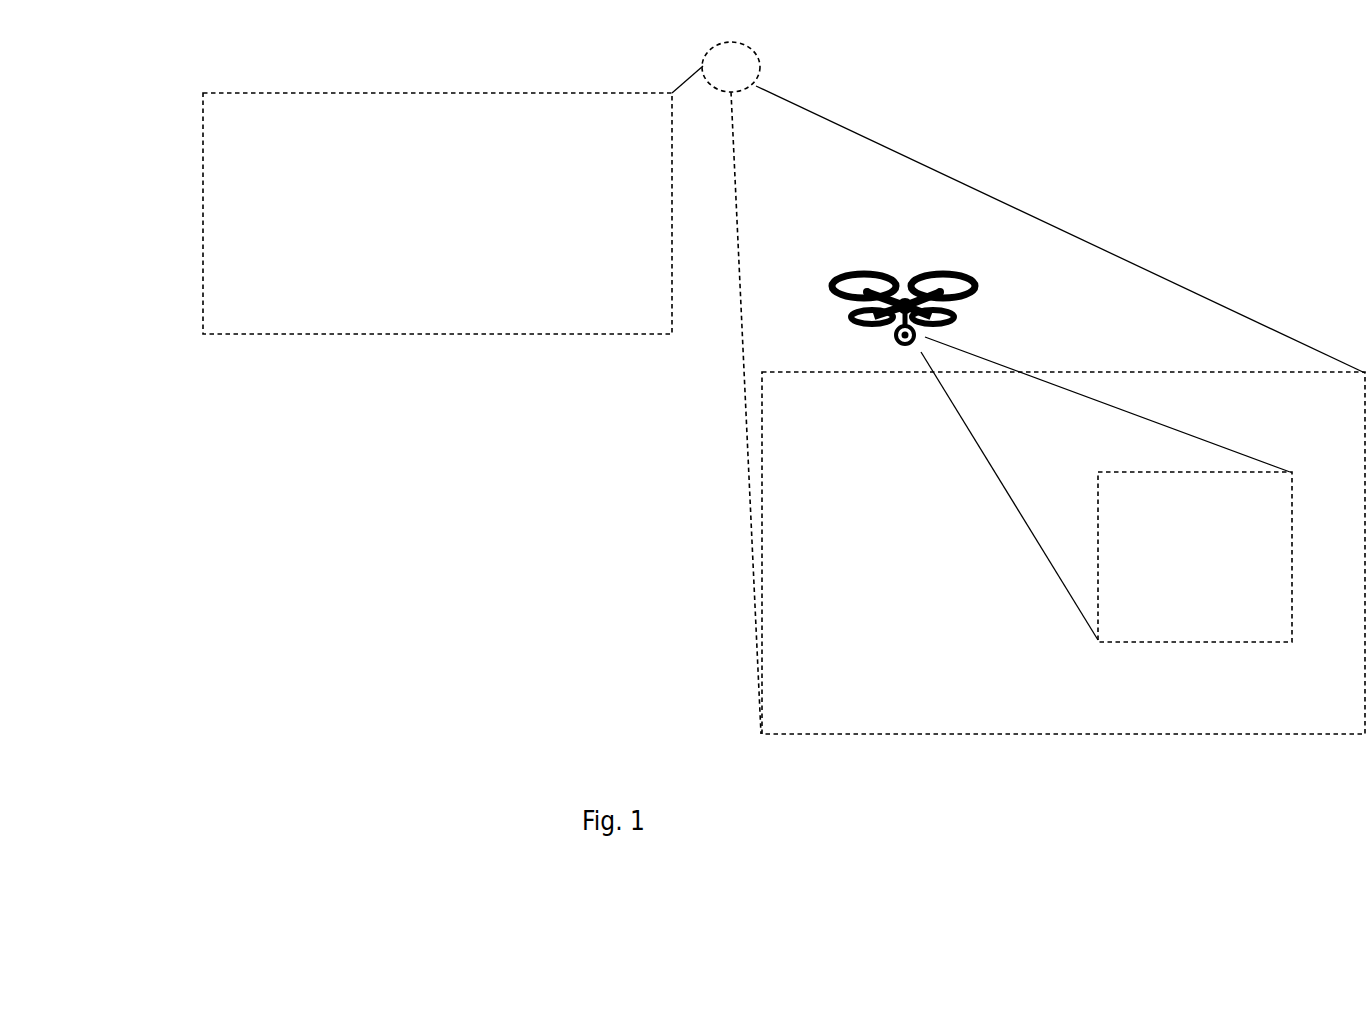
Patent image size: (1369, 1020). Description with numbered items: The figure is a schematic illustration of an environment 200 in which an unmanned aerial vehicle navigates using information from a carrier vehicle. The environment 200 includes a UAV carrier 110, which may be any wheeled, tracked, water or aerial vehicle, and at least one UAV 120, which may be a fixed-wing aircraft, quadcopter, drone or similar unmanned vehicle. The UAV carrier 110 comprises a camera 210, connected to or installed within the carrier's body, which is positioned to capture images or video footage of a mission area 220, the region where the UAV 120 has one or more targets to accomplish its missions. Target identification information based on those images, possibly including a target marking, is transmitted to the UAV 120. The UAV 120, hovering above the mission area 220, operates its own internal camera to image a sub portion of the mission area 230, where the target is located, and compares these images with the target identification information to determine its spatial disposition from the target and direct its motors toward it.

The environment 200 is at (123, 77).
The UAV carrier 110 is at (437, 213).
The camera 210 is at (1018, 382).
The UAV 120 is at (1061, 457).
The mission area 220 is at (1063, 553).
The sub portion of the mission area 230 is at (1195, 557).